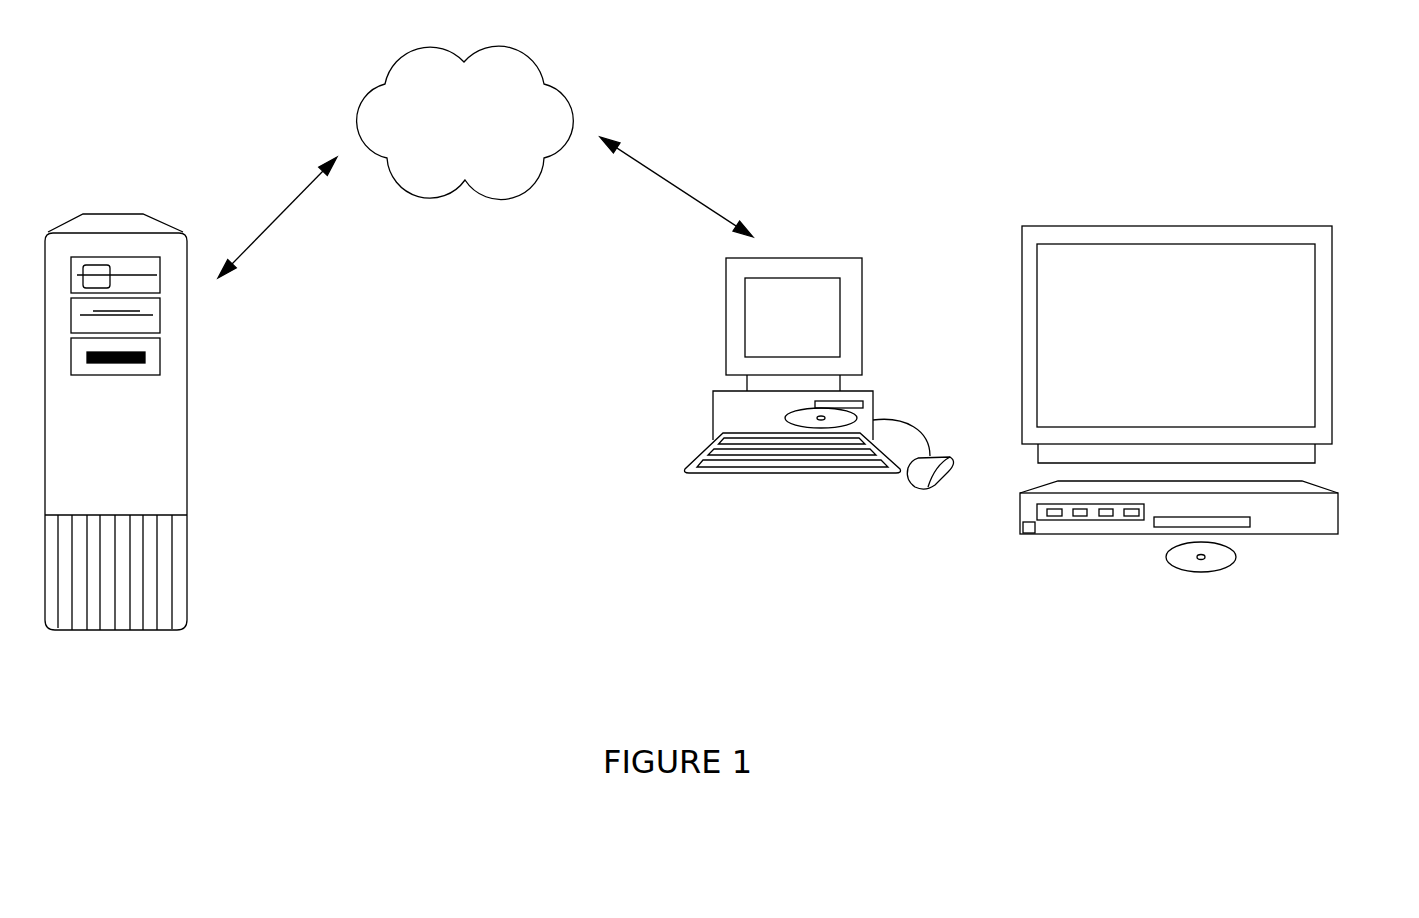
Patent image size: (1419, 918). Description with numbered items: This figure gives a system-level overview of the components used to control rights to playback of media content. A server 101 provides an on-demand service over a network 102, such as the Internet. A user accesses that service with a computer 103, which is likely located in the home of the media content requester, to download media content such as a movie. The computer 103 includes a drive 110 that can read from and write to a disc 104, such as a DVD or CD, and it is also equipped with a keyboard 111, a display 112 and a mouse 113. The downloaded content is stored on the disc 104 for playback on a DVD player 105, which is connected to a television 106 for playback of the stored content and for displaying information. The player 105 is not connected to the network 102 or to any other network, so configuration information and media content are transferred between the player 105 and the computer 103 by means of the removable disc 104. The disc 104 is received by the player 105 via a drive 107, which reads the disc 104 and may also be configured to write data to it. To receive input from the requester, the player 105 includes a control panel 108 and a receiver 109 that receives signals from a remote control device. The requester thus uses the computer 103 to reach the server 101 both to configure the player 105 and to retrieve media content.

The server 101 is at (187, 373).
The network 102 is at (572, 94).
The computer 103 is at (819, 364).
The disc 104 is at (860, 412).
The DVD player 105 is at (1198, 541).
The television 106 is at (1333, 302).
The drive 107 is at (1175, 527).
The control panel 108 is at (1107, 522).
The receiver 109 is at (1030, 535).
The drive 110 is at (853, 398).
The keyboard 111 is at (737, 475).
The display 112 is at (865, 285).
The mouse 113 is at (918, 488).